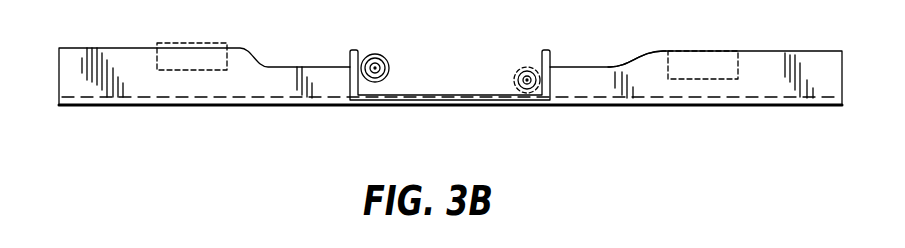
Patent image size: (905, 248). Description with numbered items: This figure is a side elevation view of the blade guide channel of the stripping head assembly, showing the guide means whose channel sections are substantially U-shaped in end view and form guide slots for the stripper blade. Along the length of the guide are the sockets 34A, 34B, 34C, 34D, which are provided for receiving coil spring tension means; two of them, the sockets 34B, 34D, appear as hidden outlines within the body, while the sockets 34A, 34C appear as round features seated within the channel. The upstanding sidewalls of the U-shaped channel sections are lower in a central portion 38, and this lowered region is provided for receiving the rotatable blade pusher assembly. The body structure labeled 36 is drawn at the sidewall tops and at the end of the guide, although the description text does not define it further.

The socket 34A is at (516, 70).
The socket 34B is at (685, 62).
The socket 34C is at (379, 55).
The socket 34D is at (196, 43).
The support frame 36 is at (553, 53).
The central portion 38 is at (612, 66).